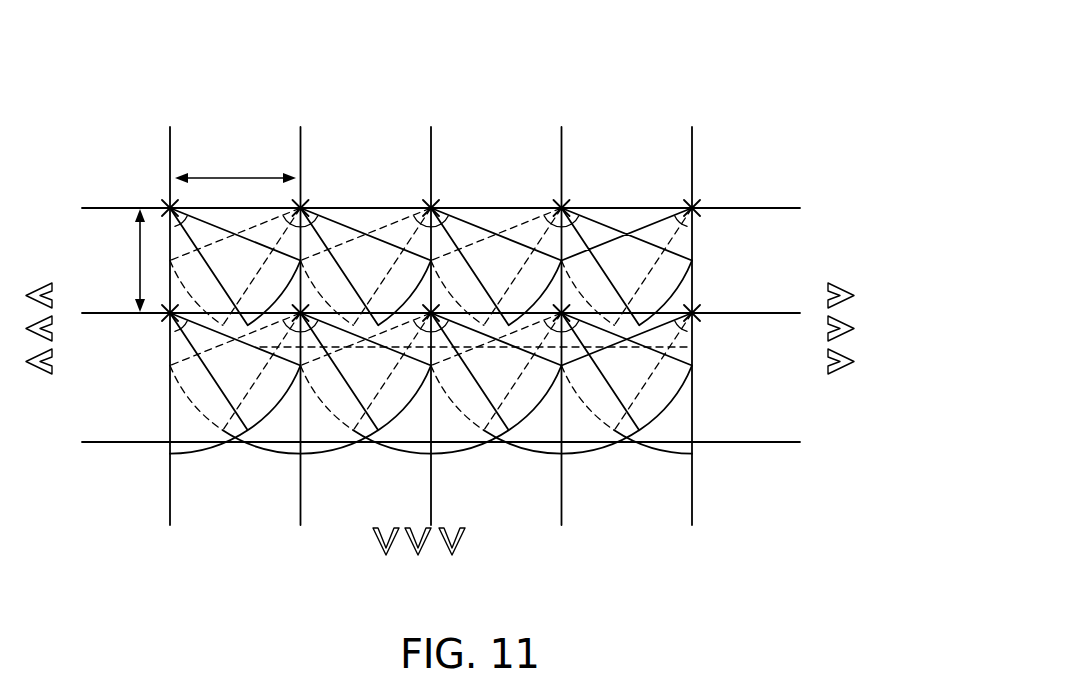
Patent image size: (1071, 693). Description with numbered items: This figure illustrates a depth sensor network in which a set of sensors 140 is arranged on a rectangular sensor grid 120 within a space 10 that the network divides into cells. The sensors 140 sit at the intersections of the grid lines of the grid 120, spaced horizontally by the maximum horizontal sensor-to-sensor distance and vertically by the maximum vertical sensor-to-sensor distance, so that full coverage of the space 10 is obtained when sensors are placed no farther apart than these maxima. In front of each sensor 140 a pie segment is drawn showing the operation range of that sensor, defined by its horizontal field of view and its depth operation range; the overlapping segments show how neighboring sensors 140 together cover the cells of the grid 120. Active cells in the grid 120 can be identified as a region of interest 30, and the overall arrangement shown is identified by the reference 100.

The space 10 is at (616, 116).
The scene / sensing field 100 is at (126, 127).
The depth sensor network grid 120 is at (695, 152).
The network sensor 140 is at (563, 205).
The region of interest 30 is at (627, 457).